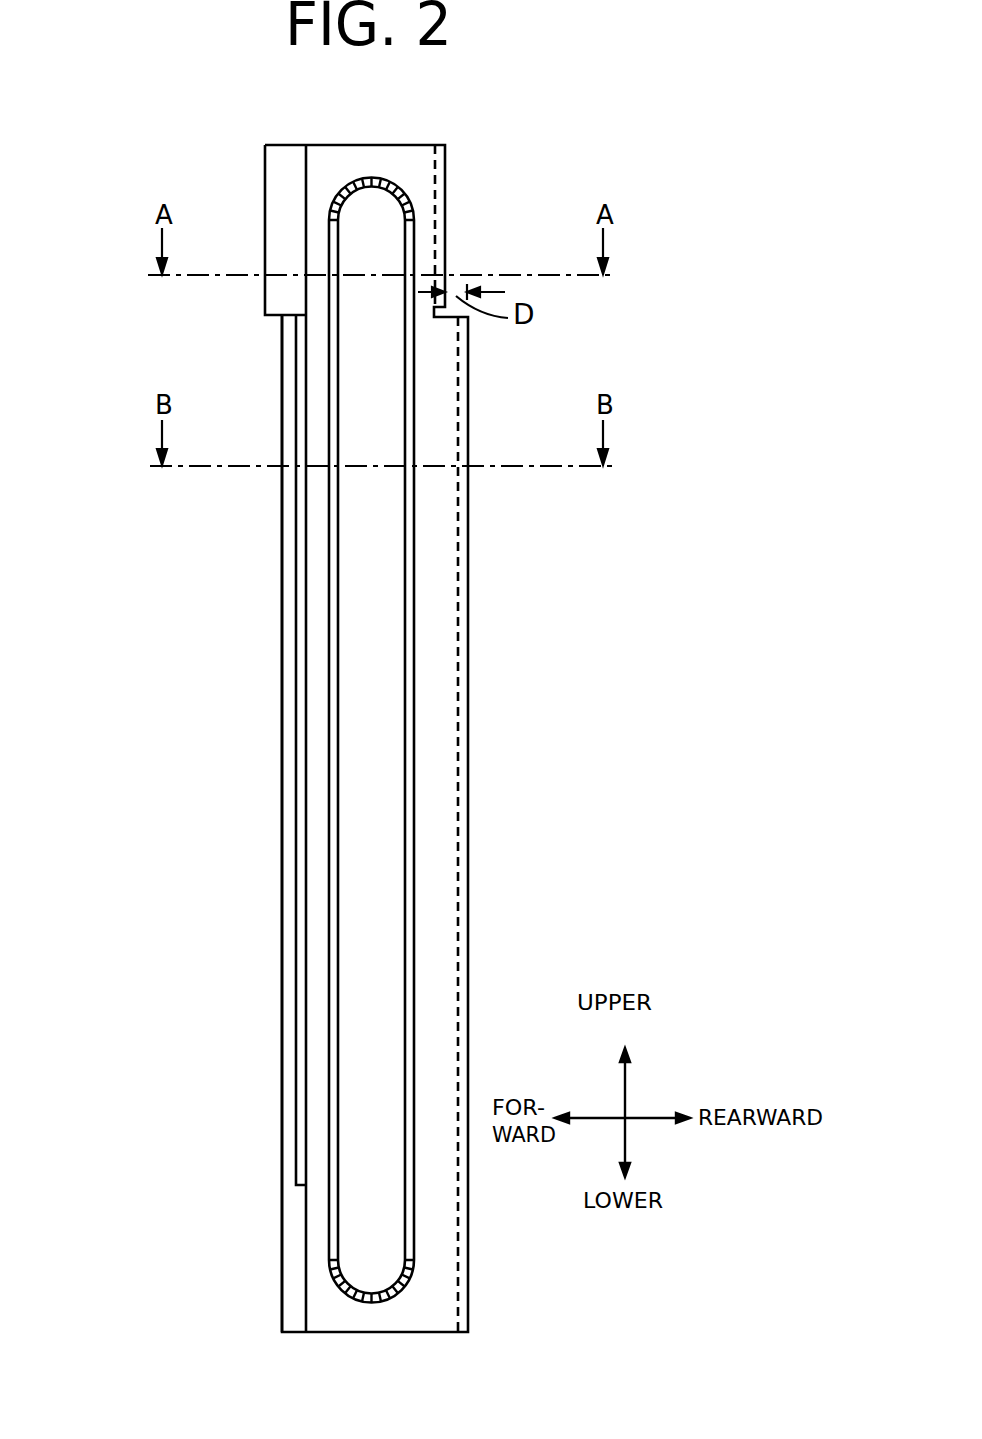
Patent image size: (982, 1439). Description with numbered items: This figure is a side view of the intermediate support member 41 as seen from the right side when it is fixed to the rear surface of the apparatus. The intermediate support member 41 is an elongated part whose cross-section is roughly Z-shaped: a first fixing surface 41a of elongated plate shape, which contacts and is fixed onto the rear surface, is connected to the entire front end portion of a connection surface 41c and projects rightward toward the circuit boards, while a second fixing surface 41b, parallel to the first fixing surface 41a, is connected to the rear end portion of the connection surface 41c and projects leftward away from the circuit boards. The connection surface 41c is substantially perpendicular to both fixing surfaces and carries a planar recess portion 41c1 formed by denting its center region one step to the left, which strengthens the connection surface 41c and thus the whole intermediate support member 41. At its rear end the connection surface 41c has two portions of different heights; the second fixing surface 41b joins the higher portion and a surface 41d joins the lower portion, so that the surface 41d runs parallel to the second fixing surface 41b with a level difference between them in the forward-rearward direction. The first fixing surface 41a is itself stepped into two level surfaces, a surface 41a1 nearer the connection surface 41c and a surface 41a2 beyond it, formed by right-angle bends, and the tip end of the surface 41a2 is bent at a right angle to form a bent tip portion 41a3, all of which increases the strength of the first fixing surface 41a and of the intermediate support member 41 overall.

The intermediate support member 41 is at (340, 705).
The first fixing surface 41a is at (176, 738).
The surface 41a1 is at (281, 507).
The surface 41a2 is at (121, 333).
The bent tip portion 41a3 is at (263, 313).
The second fixing surface 41b is at (465, 653).
The connection surface 41c is at (302, 691).
The recess portion 41c1 is at (360, 1102).
The surface 41d is at (438, 210).